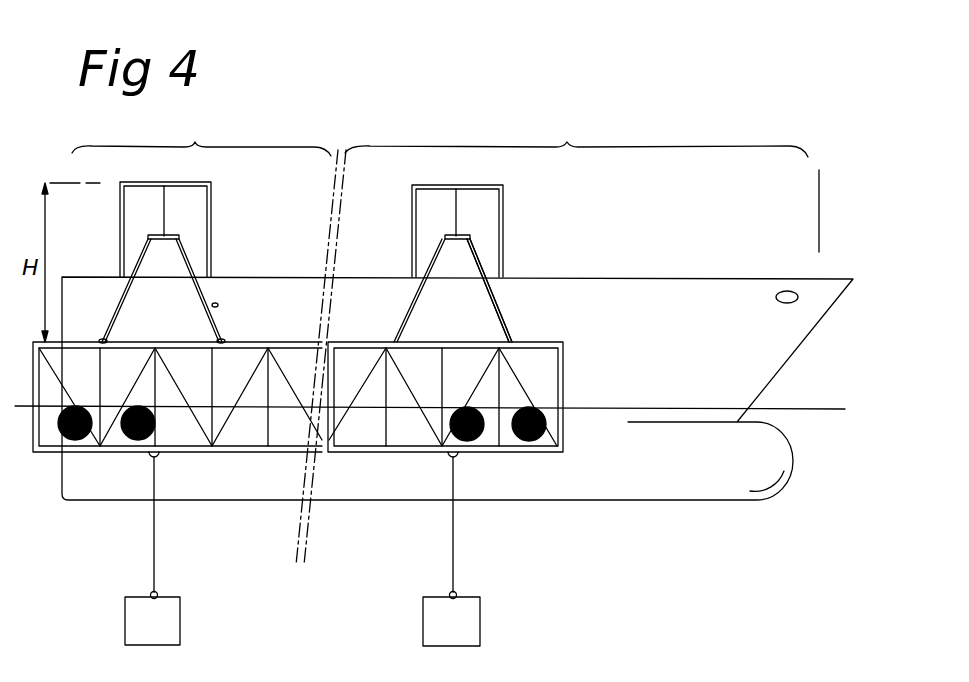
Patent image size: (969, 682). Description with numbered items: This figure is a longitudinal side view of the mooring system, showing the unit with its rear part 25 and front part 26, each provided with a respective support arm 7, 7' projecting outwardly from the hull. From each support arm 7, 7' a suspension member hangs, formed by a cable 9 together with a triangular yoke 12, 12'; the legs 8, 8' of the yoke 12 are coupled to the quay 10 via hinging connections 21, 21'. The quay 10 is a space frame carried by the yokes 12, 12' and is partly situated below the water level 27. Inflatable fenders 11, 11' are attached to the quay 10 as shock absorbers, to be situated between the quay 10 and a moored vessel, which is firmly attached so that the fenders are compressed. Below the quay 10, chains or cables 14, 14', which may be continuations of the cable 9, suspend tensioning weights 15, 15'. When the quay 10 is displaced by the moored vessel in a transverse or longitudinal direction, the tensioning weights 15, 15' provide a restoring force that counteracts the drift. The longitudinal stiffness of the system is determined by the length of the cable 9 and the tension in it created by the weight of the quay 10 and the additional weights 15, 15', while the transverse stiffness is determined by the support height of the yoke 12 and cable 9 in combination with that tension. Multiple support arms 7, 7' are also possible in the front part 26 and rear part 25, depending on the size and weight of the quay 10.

The support arm 7 is at (202, 183).
The support arm 7' is at (453, 214).
The leg of the yoke 8 is at (118, 271).
The leg of the yoke 8' is at (242, 272).
The suspension member 9 is at (166, 212).
The quay 10 is at (248, 452).
The inflatable fender 11 is at (106, 479).
The inflatable fender 11' is at (525, 483).
The triangular yoke 12 is at (226, 276).
The triangular yoke 12' is at (519, 277).
The chain or cable 14 is at (185, 522).
The chain or cable 14' is at (491, 522).
The tensioning weight 15 is at (186, 619).
The tensioning weight 15' is at (493, 619).
The hinging connection 21 is at (94, 290).
The hinging connection 21' is at (268, 290).
The rear part 25 is at (201, 135).
The front part 26 is at (576, 132).
The water level 27 is at (808, 410).